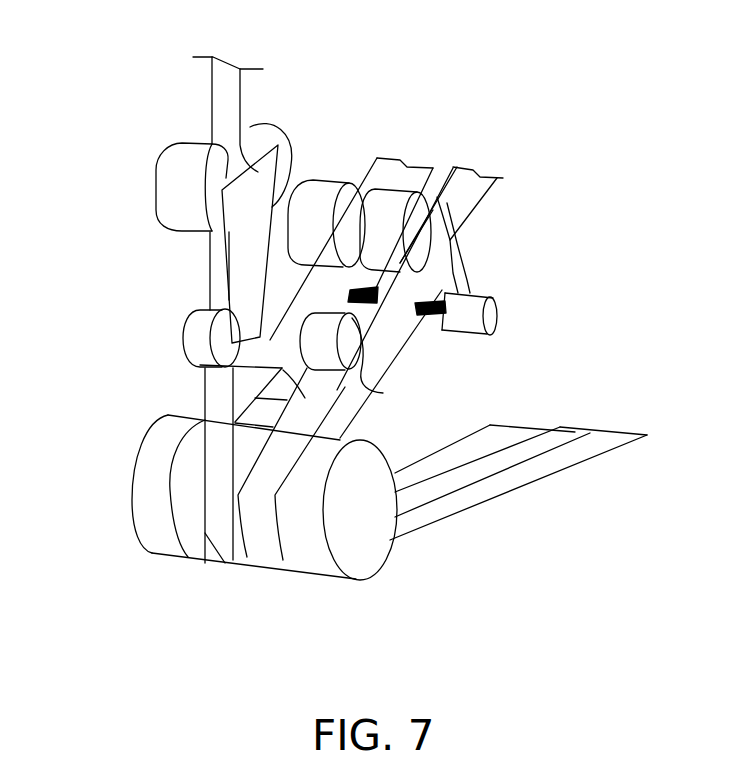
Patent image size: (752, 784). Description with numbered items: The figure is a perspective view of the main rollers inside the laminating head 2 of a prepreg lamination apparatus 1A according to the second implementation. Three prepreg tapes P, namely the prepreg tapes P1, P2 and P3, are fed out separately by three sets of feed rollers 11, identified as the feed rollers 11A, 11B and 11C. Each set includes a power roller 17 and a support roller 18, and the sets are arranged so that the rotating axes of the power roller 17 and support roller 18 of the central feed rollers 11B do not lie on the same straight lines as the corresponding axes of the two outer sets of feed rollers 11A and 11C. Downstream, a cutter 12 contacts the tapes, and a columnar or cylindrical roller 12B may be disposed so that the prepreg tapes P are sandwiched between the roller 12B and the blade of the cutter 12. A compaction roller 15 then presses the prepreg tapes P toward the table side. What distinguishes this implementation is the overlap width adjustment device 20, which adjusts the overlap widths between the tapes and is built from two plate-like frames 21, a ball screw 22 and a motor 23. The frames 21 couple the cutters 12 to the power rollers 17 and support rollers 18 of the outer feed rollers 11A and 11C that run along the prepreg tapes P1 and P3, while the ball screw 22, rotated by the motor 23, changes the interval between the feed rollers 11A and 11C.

The prepreg lamination apparatus 1A is at (88, 64).
The laminating head 2 is at (141, 272).
The feed rollers 11 is at (500, 93).
The feed rollers 11A is at (340, 182).
The feed rollers 11B is at (290, 175).
The feed rollers 11C is at (437, 182).
The cutter 12 is at (385, 391).
The roller 12B is at (188, 341).
The compaction roller 15 is at (150, 491).
The power roller 17 is at (250, 128).
The support roller 18 is at (175, 192).
The overlap width adjustment device 20 is at (563, 210).
The plate-like frame 21 is at (435, 248).
The ball screw 22 is at (448, 287).
The motor 23 is at (500, 313).
The prepreg tapes P is at (310, 613).
The prepreg tape P1 is at (198, 556).
The prepreg tape P2 is at (231, 557).
The prepreg tape P3 is at (273, 556).